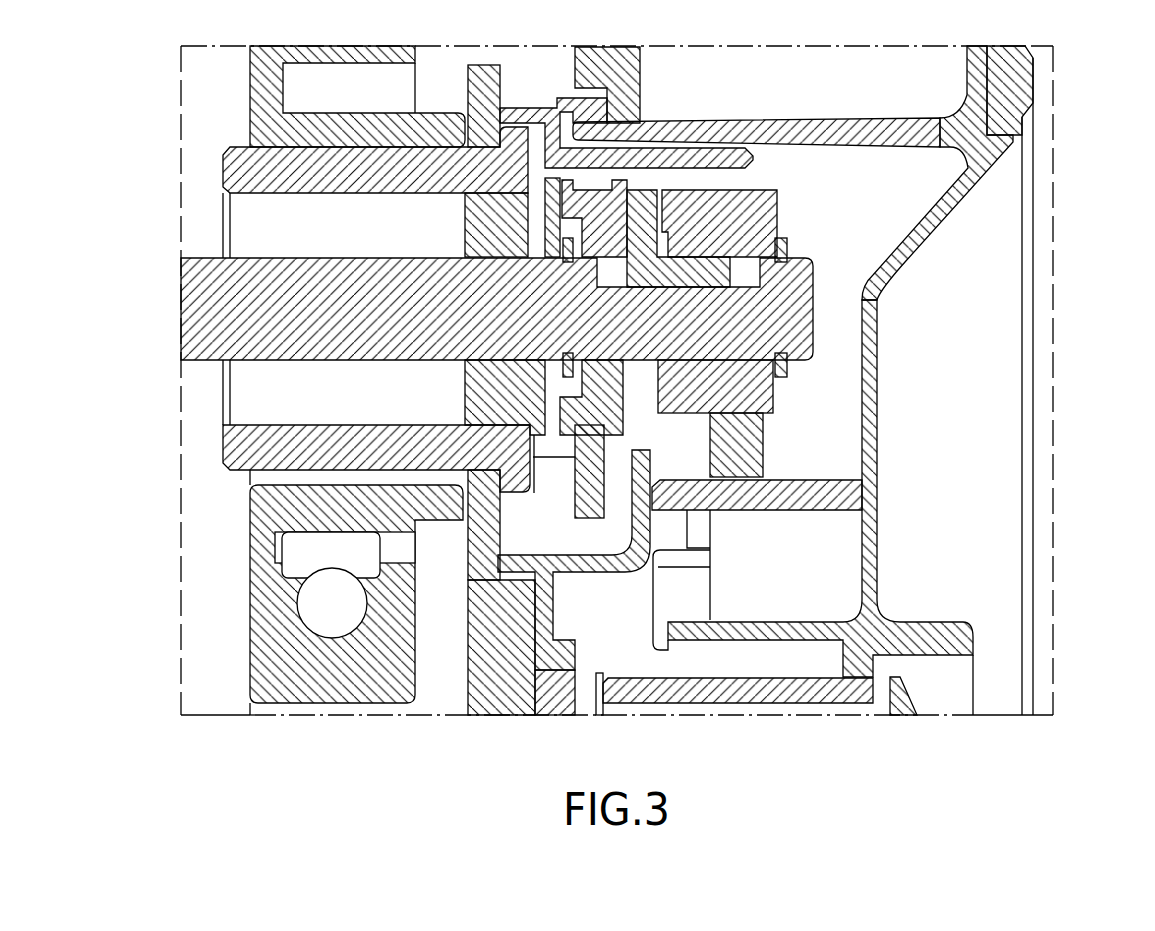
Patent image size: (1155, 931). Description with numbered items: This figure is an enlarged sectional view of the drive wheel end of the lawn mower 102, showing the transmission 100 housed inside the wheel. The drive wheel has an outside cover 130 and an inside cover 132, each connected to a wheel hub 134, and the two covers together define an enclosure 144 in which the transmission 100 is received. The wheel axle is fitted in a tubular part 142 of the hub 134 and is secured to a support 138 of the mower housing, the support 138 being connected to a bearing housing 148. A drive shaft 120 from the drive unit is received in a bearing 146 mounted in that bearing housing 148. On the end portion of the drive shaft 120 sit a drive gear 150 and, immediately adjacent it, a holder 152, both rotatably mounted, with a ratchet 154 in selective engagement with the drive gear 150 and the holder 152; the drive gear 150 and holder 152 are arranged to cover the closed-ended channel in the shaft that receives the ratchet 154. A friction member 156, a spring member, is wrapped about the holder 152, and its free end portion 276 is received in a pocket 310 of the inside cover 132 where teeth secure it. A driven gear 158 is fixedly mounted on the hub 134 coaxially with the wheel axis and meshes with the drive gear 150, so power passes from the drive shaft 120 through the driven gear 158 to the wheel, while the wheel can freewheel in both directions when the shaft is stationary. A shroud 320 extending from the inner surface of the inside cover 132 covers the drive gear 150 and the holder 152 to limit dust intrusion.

The transmission 100 is at (876, 160).
The lawn mower 102 is at (900, 715).
The drive shaft 120 is at (355, 360).
The outside cover 130 is at (1033, 492).
The inside cover 132 is at (552, 615).
The wheel hub 134 is at (877, 488).
The support 138 is at (500, 637).
The tubular part 142 is at (778, 702).
The enclosure 144 is at (1005, 239).
The bearing 146 is at (465, 233).
The bearing housing 148 is at (343, 195).
The drive gear 150 is at (685, 273).
The holder 152 is at (633, 183).
The ratchet 154 is at (755, 207).
The friction member 156 is at (574, 483).
The driven gear 158 is at (750, 452).
The free end portion 276 is at (600, 505).
The pocket 310 is at (553, 475).
The shroud 320 is at (690, 152).